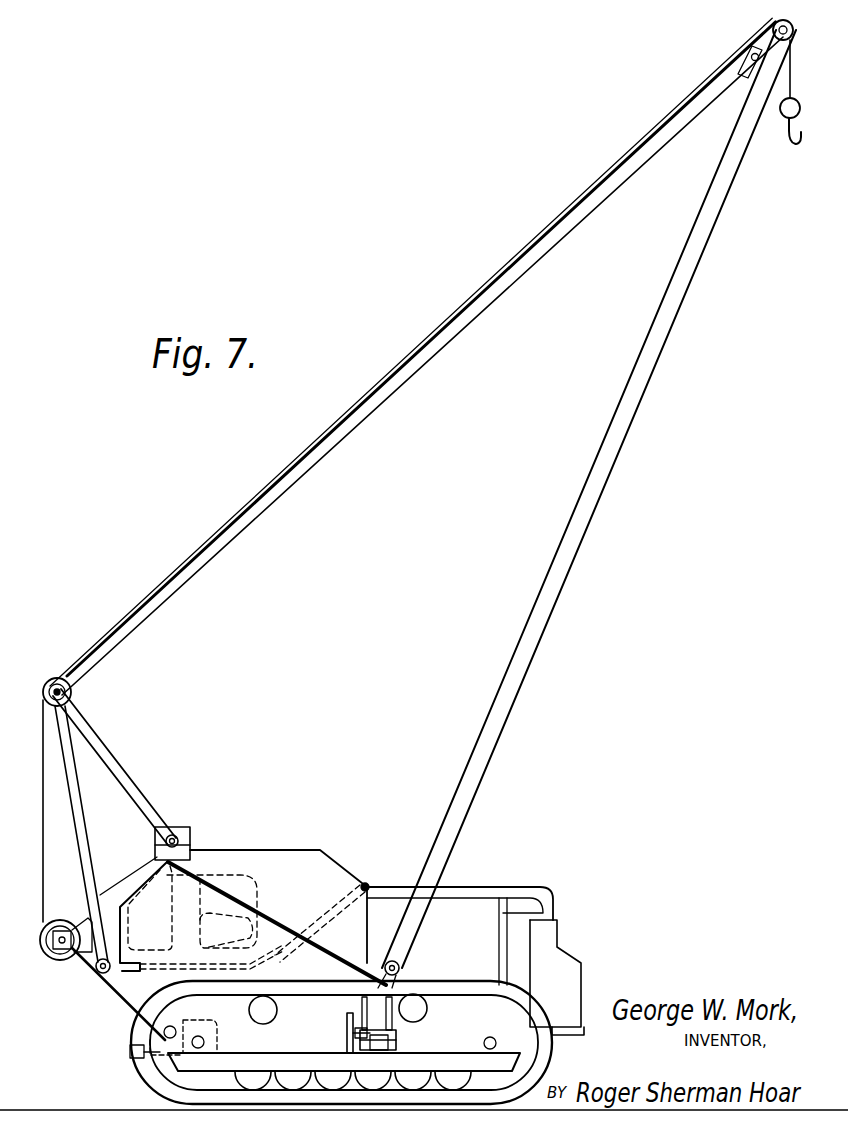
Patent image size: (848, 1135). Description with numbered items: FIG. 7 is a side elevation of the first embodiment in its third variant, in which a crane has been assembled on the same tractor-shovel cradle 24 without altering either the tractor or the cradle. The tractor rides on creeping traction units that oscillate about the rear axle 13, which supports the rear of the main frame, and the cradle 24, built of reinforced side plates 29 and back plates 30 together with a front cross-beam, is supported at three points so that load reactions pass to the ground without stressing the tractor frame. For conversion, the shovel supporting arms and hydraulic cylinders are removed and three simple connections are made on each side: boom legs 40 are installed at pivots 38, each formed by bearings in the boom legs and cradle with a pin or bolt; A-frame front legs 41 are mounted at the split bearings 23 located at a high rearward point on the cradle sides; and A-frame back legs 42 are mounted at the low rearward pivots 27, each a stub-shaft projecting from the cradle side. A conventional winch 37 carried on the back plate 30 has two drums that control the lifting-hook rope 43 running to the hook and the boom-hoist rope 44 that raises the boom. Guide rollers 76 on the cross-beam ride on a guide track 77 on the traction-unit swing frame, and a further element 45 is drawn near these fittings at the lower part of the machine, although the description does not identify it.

The rear axle 13 is at (205, 1040).
The split bearings 23 is at (188, 830).
The cradle 24 is at (122, 892).
The pivots 27 is at (100, 977).
The reinforced side plates 29 is at (282, 862).
The back plates 30 is at (82, 958).
The winch 37 is at (50, 958).
The pivots 38 is at (386, 962).
The boom legs 40 is at (507, 715).
The A-frame front legs 41 is at (120, 771).
The A-frame back legs 42 is at (83, 836).
The lifting-hook rope 43 is at (790, 84).
The boom-hoist rope 44 is at (533, 240).
The control device 45 is at (392, 1042).
The guide rollers 76 is at (347, 1035).
The guide track 77 is at (347, 1018).